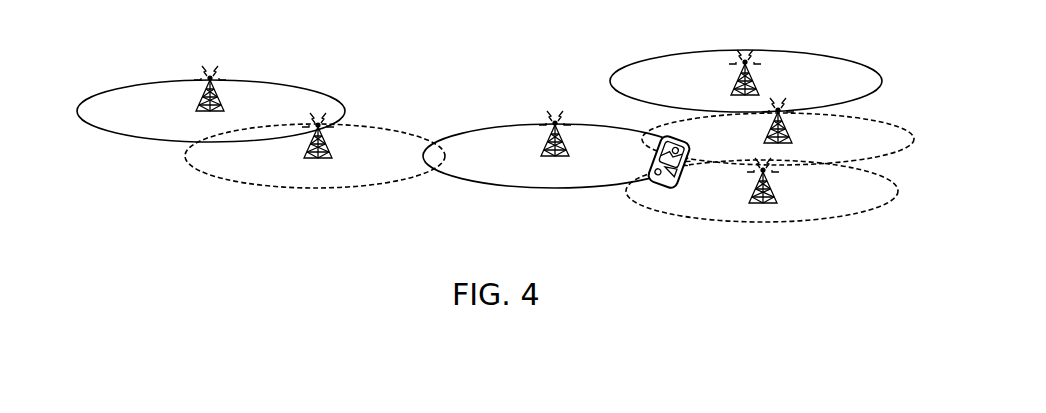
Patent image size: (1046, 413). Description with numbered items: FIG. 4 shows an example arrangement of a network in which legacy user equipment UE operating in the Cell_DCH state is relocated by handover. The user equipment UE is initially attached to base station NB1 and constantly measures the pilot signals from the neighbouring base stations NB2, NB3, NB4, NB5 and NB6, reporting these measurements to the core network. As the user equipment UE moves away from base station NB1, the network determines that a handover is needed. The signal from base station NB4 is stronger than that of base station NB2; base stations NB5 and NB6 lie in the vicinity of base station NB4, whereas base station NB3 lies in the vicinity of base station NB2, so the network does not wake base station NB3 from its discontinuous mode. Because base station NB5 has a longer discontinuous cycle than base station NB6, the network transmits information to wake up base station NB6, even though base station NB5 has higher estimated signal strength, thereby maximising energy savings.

The base station NB1 is at (555, 136).
The base station NB2 is at (211, 90).
The base station NB3 is at (315, 176).
The base station NB4 is at (746, 67).
The base station NB5 is at (778, 131).
The base station NB6 is at (762, 204).
The user equipment UE is at (650, 162).